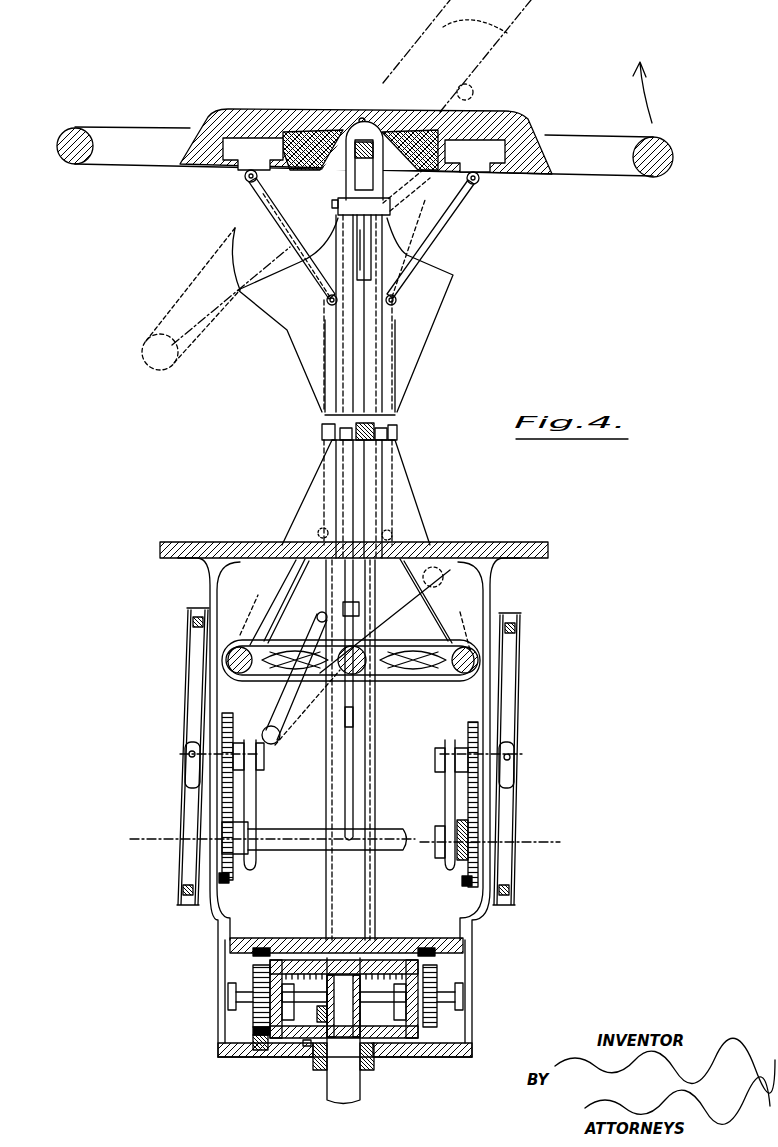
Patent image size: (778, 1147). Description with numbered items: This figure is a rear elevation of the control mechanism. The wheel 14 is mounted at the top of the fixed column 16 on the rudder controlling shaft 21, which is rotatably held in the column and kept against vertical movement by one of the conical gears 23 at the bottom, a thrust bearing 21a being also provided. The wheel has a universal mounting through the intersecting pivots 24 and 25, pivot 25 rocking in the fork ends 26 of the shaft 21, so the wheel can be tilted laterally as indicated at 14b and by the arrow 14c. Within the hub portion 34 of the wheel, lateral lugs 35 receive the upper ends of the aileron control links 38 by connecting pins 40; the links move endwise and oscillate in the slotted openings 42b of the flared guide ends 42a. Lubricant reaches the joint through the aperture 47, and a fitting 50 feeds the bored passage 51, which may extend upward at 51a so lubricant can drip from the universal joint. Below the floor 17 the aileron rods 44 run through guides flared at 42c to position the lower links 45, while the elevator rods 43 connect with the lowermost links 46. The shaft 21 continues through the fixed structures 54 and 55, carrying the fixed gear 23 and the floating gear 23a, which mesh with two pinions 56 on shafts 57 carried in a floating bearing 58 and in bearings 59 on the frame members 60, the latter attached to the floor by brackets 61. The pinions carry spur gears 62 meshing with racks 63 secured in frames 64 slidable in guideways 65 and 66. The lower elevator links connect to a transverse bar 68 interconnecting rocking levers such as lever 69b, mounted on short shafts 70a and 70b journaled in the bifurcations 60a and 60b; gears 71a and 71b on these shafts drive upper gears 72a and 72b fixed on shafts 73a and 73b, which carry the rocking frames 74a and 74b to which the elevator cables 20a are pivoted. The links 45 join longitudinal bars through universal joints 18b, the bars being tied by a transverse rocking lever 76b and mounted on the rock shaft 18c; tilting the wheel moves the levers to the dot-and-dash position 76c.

The wheel 14 is at (76, 128).
The laterally tilted wheel position 14b is at (162, 370).
The arrow indicating wheel tilting 14c is at (645, 98).
The fixed column 16 is at (368, 906).
The floor 17 is at (492, 546).
The universal joints 18b is at (353, 620).
The rock shaft 18c is at (335, 695).
The elevator control cables 20a is at (192, 622).
The rudder controlling shaft 21 is at (393, 215).
The thrust bearing 21a is at (305, 1047).
The conical gear 23 is at (343, 1006).
The floating conical gear 23a is at (346, 1011).
The pivot 24 is at (358, 165).
The pivot 25 is at (356, 120).
The fork ends 26 is at (376, 126).
The handlebar hub 34 is at (548, 172).
The lugs 35 is at (364, 155).
The aileron control links 38 is at (278, 233).
The link connecting pins 40 is at (244, 178).
The flared upper ends of tubular guides 42a is at (302, 340).
The slotted openings 42b is at (372, 250).
The flared lower ends of aileron guides 42c is at (298, 505).
The elevator push-and-pull control rods 43 is at (372, 385).
The aileron push-and-pull control rods 44 is at (322, 432).
The lower aileron links 45 is at (280, 595).
The lower elevator links 46 is at (355, 766).
The lubricant aperture 47 is at (363, 117).
The lubricant fitting 50 is at (333, 200).
The bored longitudinal passage 51 is at (338, 206).
The upward extension of oil passage 51a is at (415, 190).
The fixed supporting structure 54 is at (408, 938).
The fixed supporting structure 55 is at (398, 1060).
The pinions 56 is at (344, 1001).
The shafts 57 is at (252, 1005).
The floating bearing 58 is at (318, 1012).
The bearings 59 is at (230, 983).
The fixed frame members 60 is at (216, 933).
The bifurcation of framework 60a is at (252, 812).
The bifurcation of framework 60b is at (445, 798).
The brackets 61 is at (180, 562).
The spur gears 62 is at (437, 975).
The racks 63 is at (240, 1057).
The links or frames 64 is at (263, 938).
The guideway 65 is at (266, 948).
The guideway 66 is at (252, 1043).
The transverse bar 68 is at (290, 850).
The right rocking lever 69b is at (458, 855).
The short shaft 70a is at (272, 837).
The short shaft 70b is at (491, 848).
The lower gear 71a is at (230, 878).
The lower gear 71b is at (466, 884).
The upper gear 72a is at (227, 710).
The upper gear 72b is at (468, 724).
The short shaft 73a is at (189, 752).
The short shaft 73b is at (507, 752).
The rocking frame 74a is at (190, 648).
The rocking frame 74b is at (519, 664).
The transverse rocking lever 76b is at (268, 628).
The tilted position of rock levers 76c is at (351, 620).